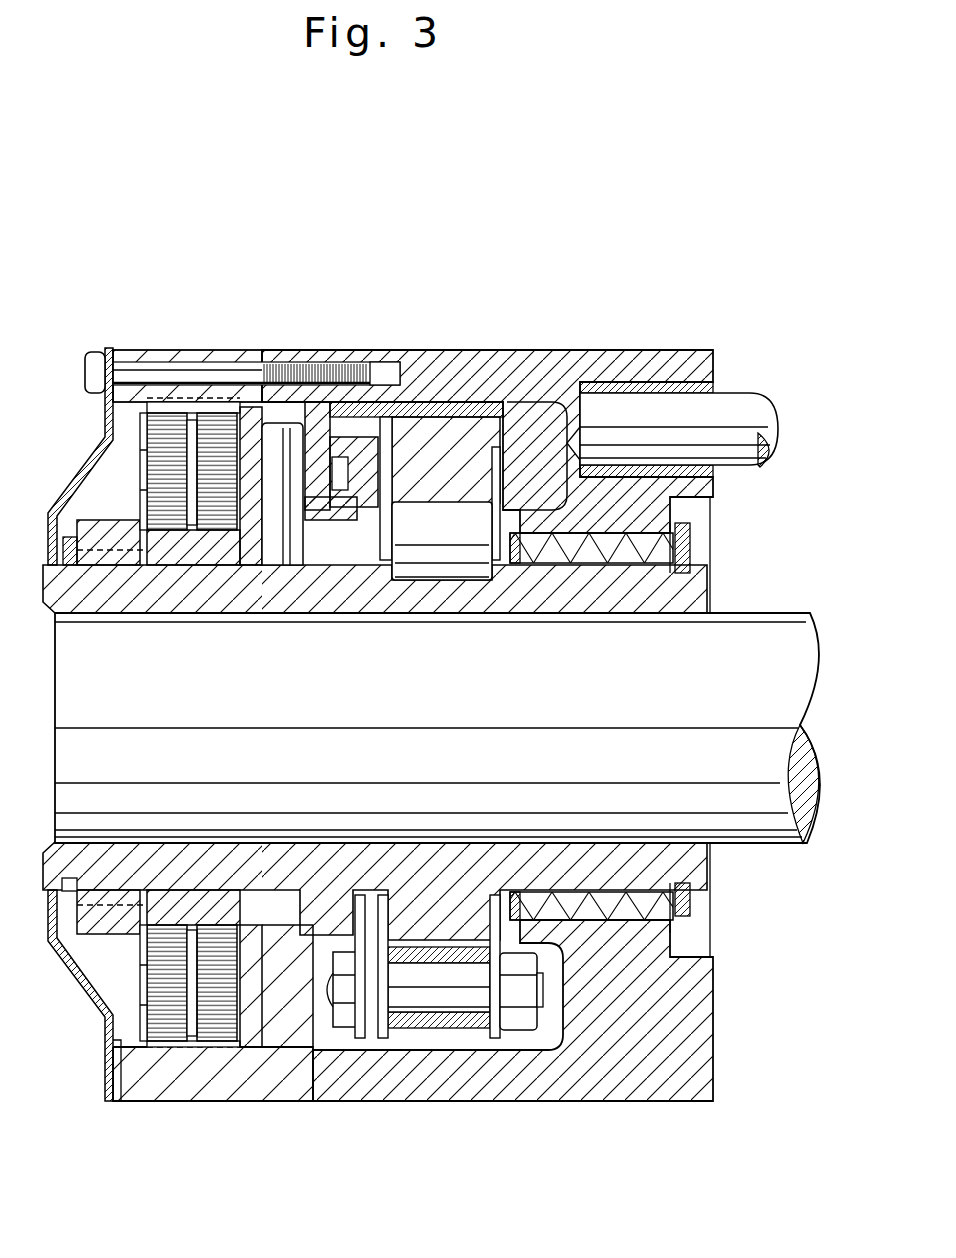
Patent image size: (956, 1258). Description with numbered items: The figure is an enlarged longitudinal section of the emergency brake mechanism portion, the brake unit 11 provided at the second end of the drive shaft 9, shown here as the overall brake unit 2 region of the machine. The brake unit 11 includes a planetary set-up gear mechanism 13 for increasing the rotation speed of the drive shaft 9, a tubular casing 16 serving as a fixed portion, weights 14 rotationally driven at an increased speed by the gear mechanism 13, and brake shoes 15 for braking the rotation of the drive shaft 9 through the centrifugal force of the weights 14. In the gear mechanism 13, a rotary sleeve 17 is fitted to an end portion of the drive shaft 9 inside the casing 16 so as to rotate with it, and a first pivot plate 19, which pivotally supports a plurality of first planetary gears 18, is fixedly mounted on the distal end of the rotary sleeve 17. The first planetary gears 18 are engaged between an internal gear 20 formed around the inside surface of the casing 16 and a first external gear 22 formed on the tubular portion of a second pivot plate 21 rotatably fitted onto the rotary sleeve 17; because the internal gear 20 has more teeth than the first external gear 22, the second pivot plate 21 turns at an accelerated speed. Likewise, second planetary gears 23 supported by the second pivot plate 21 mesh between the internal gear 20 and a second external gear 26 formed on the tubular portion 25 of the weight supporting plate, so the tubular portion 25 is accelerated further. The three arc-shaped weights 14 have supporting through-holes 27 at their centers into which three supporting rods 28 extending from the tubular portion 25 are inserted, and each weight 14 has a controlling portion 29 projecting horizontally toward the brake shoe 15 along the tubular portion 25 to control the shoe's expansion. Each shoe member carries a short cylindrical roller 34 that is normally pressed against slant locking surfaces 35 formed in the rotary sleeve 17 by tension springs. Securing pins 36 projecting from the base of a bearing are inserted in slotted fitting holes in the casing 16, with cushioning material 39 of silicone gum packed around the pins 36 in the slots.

The bearing unit 2 is at (530, 327).
The drive shaft 9 is at (735, 643).
The brake unit 11 is at (333, 1040).
The planetary set-up gear mechanism 13 is at (133, 455).
The weights 14 is at (323, 350).
The brake shoes 15 is at (462, 460).
The tubular casing 16 is at (415, 345).
The rotary sleeve 17 is at (190, 600).
The first planetary gears 18 is at (163, 430).
The first pivot plate 19 is at (140, 499).
The internal gear 20 is at (160, 427).
The second pivot plate 21 is at (153, 565).
The first external gear 22 is at (118, 565).
The second planetary gears 23 is at (218, 428).
The tubular portion 25 is at (227, 565).
The second external gear 26 is at (238, 930).
The supporting through-holes 27 is at (273, 465).
The supporting rods 28 is at (250, 420).
The controlling portion 29 is at (350, 515).
The roller 34 is at (450, 582).
The slant locking surfaces 35 is at (487, 567).
The securing pins 36 is at (668, 408).
The cushioning material 39 is at (614, 382).